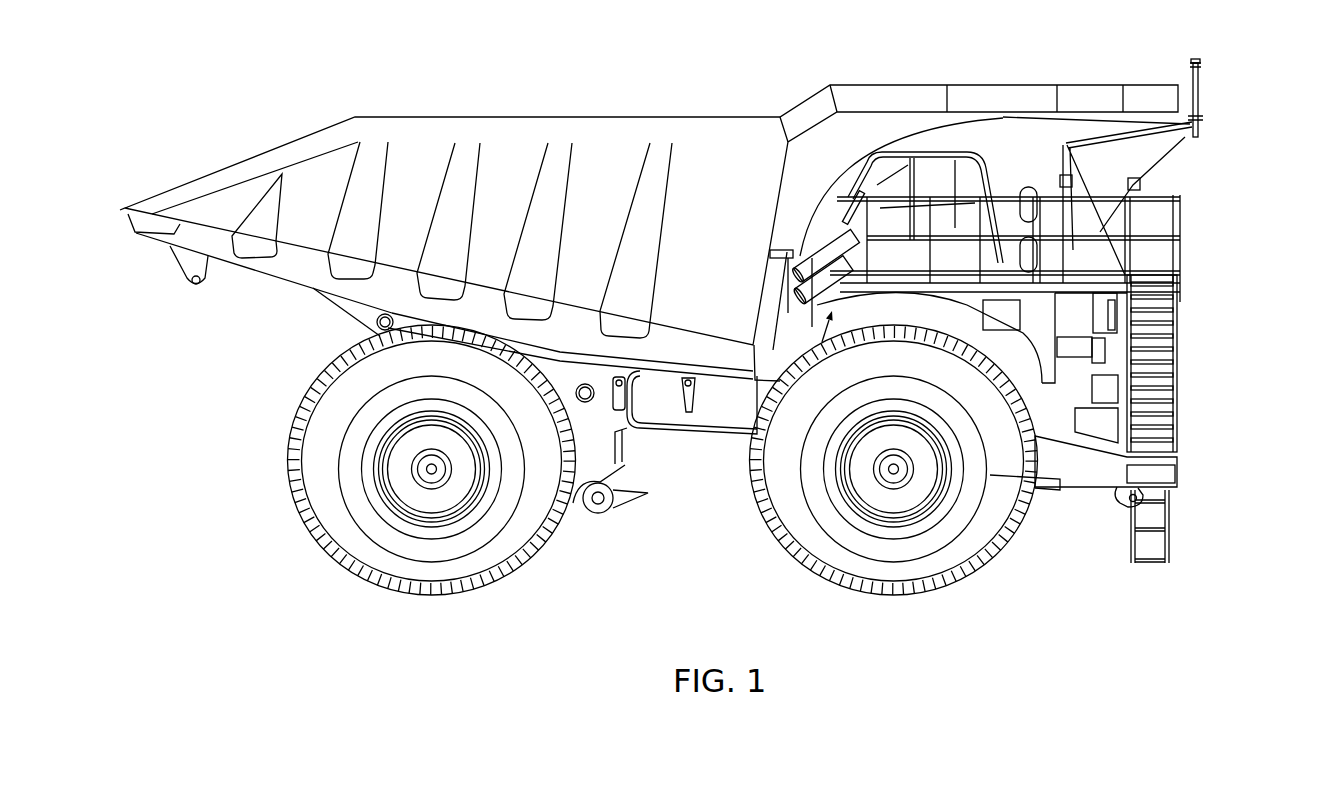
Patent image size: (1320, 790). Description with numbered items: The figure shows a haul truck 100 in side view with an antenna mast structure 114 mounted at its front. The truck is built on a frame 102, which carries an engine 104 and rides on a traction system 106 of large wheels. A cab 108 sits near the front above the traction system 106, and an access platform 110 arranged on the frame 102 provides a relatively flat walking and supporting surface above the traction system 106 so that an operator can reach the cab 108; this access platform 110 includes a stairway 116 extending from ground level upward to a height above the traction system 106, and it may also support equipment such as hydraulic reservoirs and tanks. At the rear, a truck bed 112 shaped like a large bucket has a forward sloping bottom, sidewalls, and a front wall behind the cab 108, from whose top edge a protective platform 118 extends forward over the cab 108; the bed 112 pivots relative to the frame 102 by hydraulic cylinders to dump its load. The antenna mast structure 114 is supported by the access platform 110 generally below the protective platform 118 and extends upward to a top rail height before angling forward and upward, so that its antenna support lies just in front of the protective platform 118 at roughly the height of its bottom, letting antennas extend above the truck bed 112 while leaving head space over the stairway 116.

The haul truck 100 is at (237, 82).
The frame 102 is at (708, 415).
The engine 104 is at (753, 482).
The traction system 106 is at (988, 599).
The cab 108 is at (980, 155).
The access platform 110 is at (1196, 279).
The truck bed 112 is at (602, 167).
The antenna mast structure 114 is at (1214, 86).
The stairway 116 is at (1152, 415).
The protective platform 118 is at (1083, 100).